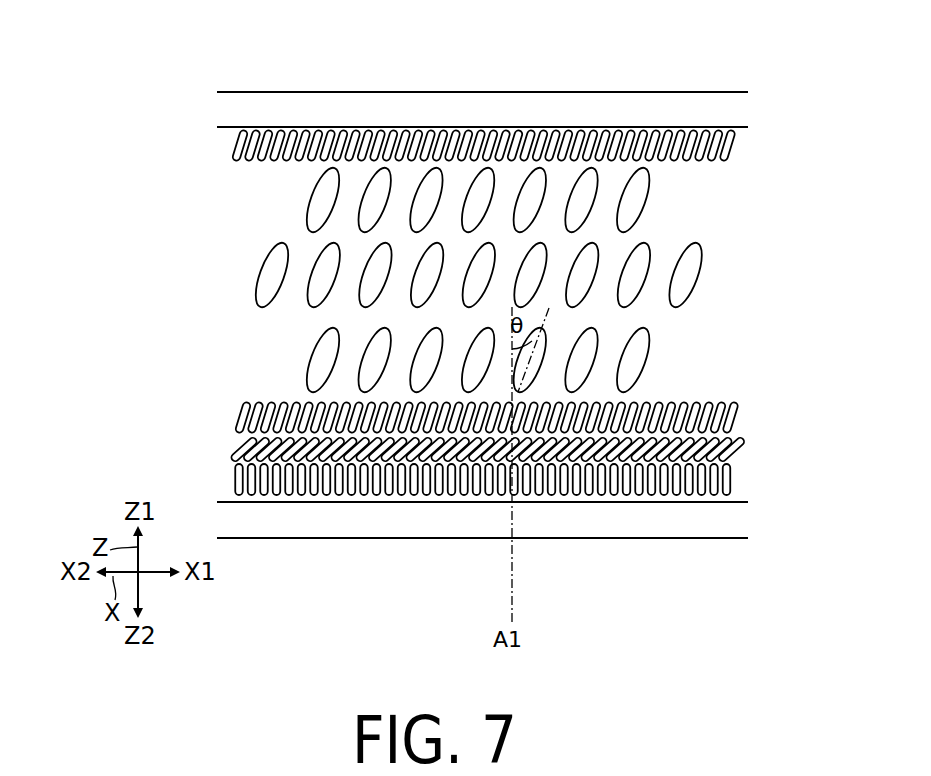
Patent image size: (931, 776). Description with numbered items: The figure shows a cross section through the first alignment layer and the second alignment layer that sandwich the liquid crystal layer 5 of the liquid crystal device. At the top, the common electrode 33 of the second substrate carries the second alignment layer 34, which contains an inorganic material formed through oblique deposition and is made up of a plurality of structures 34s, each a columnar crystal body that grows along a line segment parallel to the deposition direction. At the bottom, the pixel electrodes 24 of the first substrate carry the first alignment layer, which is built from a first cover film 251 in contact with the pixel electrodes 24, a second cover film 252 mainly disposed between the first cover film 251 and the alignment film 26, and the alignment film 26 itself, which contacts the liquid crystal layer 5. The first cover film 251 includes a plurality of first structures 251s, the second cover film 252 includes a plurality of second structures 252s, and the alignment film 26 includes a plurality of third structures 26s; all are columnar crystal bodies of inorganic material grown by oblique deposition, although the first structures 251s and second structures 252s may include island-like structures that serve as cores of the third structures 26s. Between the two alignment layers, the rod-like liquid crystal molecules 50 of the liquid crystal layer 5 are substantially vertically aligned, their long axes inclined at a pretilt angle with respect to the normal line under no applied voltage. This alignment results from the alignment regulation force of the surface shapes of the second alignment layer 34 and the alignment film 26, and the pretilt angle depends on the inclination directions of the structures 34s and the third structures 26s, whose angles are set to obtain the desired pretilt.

The common electrode 33 is at (716, 104).
The second alignment layer 34 is at (752, 130).
The structure 34s is at (448, 130).
The liquid crystal layer 5 is at (487, 282).
The liquid crystal molecule 50 is at (312, 288).
The alignment film 26 is at (752, 401).
The third structure 26s is at (635, 423).
The second cover film 252 is at (752, 437).
The second structure 252s is at (464, 452).
The first cover film 251 is at (752, 465).
The first structure 251s is at (312, 478).
The pixel electrode 24 is at (716, 520).